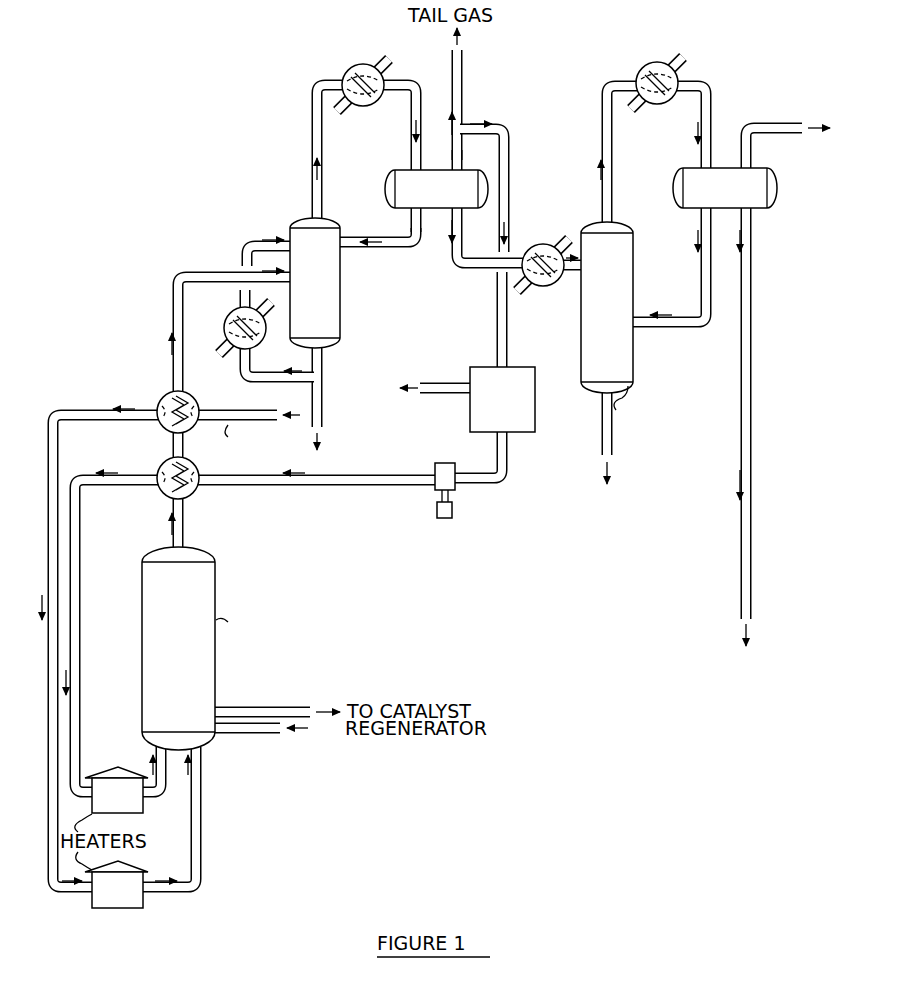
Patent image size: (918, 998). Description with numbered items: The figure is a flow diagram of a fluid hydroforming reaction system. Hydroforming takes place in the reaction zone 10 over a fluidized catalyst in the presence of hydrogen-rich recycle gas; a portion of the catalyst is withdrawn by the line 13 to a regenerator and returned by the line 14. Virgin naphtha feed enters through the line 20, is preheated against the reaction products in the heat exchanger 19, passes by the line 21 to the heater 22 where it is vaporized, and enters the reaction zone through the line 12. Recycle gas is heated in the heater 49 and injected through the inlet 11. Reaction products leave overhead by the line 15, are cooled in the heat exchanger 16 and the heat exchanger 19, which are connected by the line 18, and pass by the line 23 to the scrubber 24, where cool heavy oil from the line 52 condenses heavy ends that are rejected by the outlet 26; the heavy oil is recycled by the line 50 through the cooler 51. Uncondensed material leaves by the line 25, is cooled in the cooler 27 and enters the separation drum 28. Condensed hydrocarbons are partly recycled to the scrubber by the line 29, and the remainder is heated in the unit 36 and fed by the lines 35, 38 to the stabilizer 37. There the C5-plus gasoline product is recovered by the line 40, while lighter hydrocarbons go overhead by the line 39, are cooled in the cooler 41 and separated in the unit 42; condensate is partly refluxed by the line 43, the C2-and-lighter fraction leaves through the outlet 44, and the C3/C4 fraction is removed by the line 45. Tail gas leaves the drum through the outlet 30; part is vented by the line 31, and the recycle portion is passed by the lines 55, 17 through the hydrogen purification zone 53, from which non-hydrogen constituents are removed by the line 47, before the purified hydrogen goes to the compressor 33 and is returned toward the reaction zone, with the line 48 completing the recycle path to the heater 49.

The reaction zone 10 is at (215, 582).
The inlet 11 is at (158, 796).
The line 12 is at (196, 836).
The line 13 is at (254, 708).
The line 14 is at (244, 732).
The line 15 is at (186, 520).
The heat exchanger 16 is at (188, 488).
The line 17 is at (310, 486).
The line 18 is at (172, 445).
The heat exchanger 19 is at (186, 404).
The line 20 is at (232, 412).
The line 21 is at (134, 406).
The heater 22 is at (124, 910).
The line 23 is at (170, 306).
The scrubber 24 is at (341, 305).
The line 25 is at (310, 131).
The outlet 26 is at (324, 388).
The cooler 27 is at (358, 66).
The separation drum 28 is at (388, 175).
The line 29 is at (362, 252).
The outlet 30 is at (464, 150).
The line 31 is at (464, 78).
The compressor 33 is at (440, 460).
The line 35 is at (456, 264).
The unit 36 is at (538, 249).
The stabilizer 37 is at (580, 336).
The line 38 is at (568, 270).
The line 39 is at (602, 118).
The line 40 is at (600, 420).
The cooler 41 is at (650, 64).
The unit 42 is at (677, 172).
The line 43 is at (696, 258).
The outlet 44 is at (746, 122).
The line 45 is at (760, 268).
The line 47 is at (436, 386).
The line to heater 49 48 is at (96, 578).
The heater 49 is at (116, 772).
The line 50 is at (252, 376).
The cooler 51 is at (226, 322).
The line 52 is at (251, 238).
The zone 53 is at (468, 414).
The line 55 is at (496, 321).